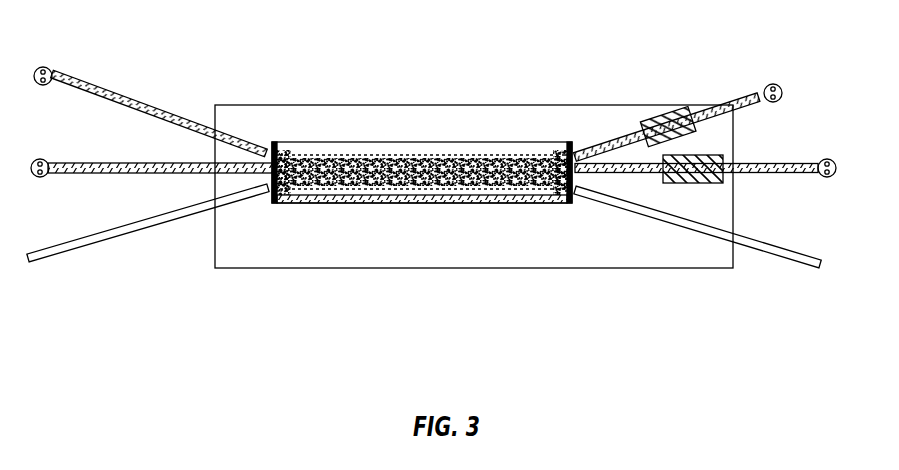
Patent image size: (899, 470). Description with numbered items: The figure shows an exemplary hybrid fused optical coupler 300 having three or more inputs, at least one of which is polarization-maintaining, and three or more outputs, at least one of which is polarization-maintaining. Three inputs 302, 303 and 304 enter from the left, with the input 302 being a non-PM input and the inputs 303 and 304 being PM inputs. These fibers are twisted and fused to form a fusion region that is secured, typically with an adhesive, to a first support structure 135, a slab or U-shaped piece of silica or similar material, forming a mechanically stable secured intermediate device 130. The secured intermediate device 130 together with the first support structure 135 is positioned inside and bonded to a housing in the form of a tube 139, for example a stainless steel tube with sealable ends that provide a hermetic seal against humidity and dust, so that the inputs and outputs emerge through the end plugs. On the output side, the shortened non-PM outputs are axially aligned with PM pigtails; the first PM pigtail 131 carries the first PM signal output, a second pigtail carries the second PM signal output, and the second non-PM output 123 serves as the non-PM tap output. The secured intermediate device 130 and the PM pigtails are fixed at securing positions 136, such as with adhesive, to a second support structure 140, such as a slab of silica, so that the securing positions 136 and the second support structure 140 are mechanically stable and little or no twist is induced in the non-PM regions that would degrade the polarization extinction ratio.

The hybrid fused optical coupler 300 is at (155, 258).
The non-PM input 302 is at (121, 222).
The PM input 303 is at (134, 160).
The PM input 304 is at (109, 90).
The second support structure 140 is at (270, 110).
The tube 139 is at (405, 142).
The first support structure 135 is at (524, 152).
The securing positions 136 is at (702, 192).
The secured intermediate device 130 is at (481, 179).
The first PM pigtail 131 is at (733, 157).
The second non-PM output 123 is at (718, 241).